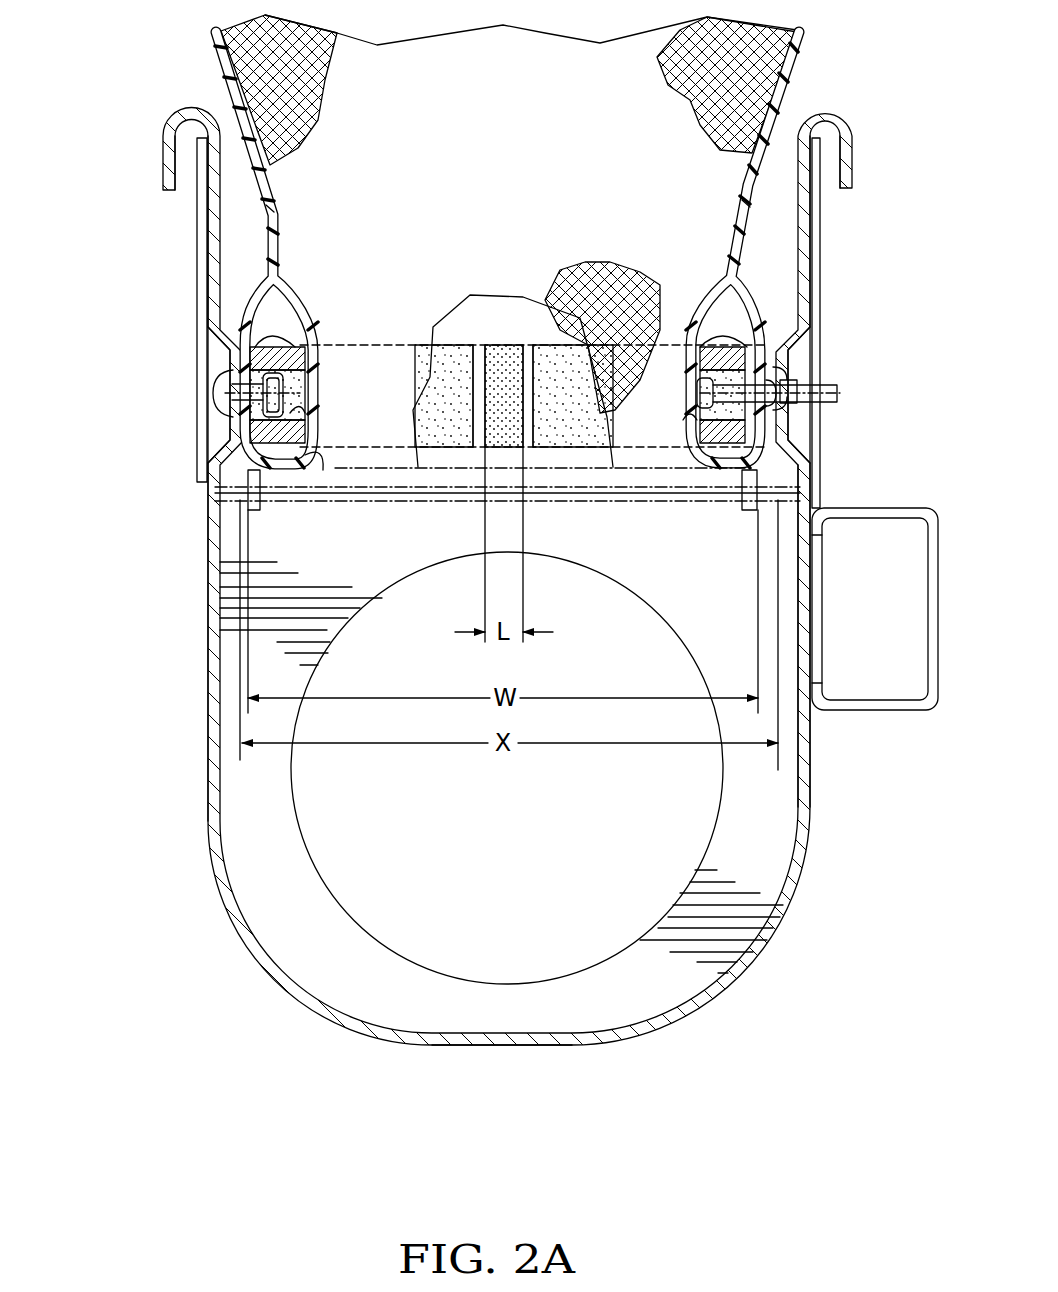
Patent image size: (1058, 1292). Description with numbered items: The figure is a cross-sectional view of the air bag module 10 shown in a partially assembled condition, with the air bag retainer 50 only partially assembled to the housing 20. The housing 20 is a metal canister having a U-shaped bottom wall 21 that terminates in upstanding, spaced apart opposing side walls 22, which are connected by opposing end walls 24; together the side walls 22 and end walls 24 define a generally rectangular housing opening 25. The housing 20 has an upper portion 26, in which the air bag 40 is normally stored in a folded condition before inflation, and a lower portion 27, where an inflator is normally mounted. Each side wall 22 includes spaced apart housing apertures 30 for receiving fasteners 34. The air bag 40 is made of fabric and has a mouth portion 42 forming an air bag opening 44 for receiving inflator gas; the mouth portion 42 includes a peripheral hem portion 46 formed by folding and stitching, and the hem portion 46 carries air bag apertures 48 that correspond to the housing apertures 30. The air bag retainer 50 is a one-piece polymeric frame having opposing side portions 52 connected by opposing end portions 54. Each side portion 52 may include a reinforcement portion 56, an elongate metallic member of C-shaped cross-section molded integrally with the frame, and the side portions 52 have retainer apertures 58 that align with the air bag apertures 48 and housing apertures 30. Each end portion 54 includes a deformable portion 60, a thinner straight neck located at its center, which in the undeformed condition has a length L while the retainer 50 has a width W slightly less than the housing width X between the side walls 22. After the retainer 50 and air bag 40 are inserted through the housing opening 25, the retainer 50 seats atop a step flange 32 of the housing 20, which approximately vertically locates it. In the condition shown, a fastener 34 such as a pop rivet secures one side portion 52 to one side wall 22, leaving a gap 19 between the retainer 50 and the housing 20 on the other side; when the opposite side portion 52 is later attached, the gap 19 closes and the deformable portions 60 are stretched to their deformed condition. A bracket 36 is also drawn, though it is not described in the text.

The air bag module 10 is at (98, 238).
The gap 19 is at (775, 422).
The housing 20 is at (818, 845).
The U-shaped bottom wall 21 is at (555, 1045).
The side walls 22 is at (210, 800).
The end walls 24 is at (280, 890).
The housing opening 25 is at (775, 135).
The upper portion 26 is at (820, 262).
The lower portion 27 is at (812, 800).
The housing apertures 30 is at (233, 390).
The step flange 32 is at (567, 493).
The fasteners 34 is at (278, 393).
The support bracket 36 is at (262, 500).
The air bag 40 is at (806, 47).
The mouth portion 42 is at (265, 280).
The air bag opening 44 is at (323, 450).
The peripheral hem portion 46 is at (263, 212).
The air bag apertures 48 is at (232, 403).
The air bag retainer 50 is at (712, 328).
The side portions 52 is at (270, 340).
The end portions 54 is at (553, 362).
The reinforcement portion 56 is at (283, 322).
The retainer apertures 58 is at (298, 413).
The deformable portion 60 is at (500, 360).